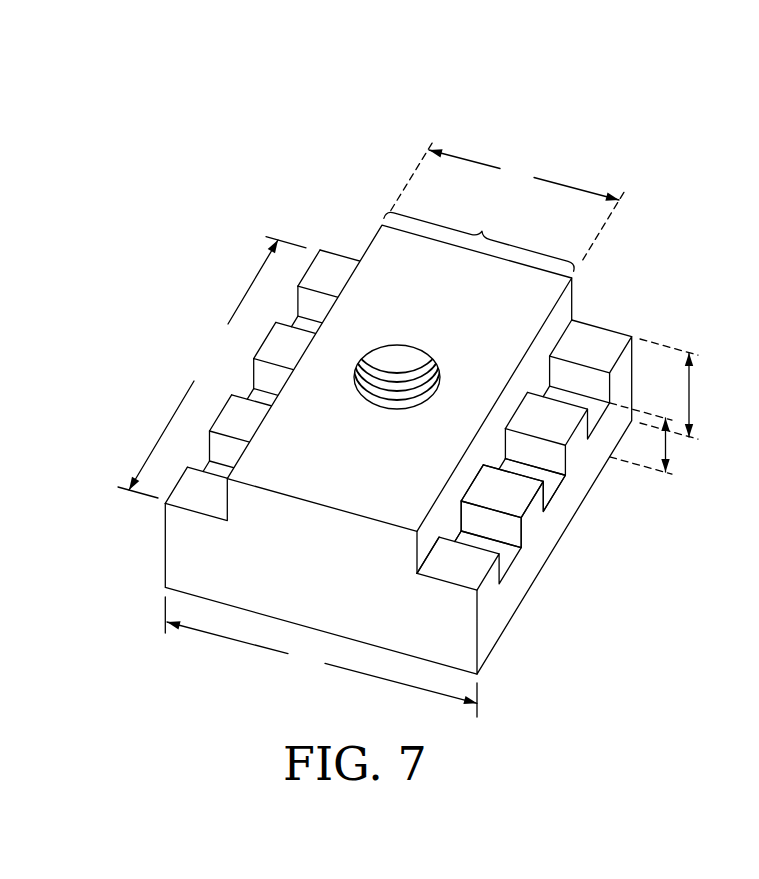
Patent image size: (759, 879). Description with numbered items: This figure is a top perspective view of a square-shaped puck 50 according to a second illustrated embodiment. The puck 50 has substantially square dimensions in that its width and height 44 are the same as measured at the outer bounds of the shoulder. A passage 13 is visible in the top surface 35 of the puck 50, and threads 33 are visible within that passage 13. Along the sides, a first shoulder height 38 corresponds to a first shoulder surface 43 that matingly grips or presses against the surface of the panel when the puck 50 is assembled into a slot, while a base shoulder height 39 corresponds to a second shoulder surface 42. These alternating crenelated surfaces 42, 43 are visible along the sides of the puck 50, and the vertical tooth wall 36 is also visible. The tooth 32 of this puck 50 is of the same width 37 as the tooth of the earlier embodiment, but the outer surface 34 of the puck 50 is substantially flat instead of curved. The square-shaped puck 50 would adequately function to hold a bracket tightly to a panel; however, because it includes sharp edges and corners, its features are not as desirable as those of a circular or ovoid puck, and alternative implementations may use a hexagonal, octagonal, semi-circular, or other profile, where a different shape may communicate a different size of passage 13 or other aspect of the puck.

The square-shaped puck 50 is at (400, 364).
The width 37 is at (508, 200).
The tooth 32 is at (481, 236).
The top surface 35 is at (397, 270).
The width and height 44 is at (297, 477).
The passage 13 is at (396, 383).
The threads 33 is at (418, 358).
The first shoulder height 38 is at (690, 393).
The base shoulder height 39 is at (667, 444).
The second shoulder surface 42 is at (552, 482).
The first shoulder surface 43 is at (523, 495).
The vertical tooth wall 36 is at (425, 546).
The outer surface 34 is at (325, 584).